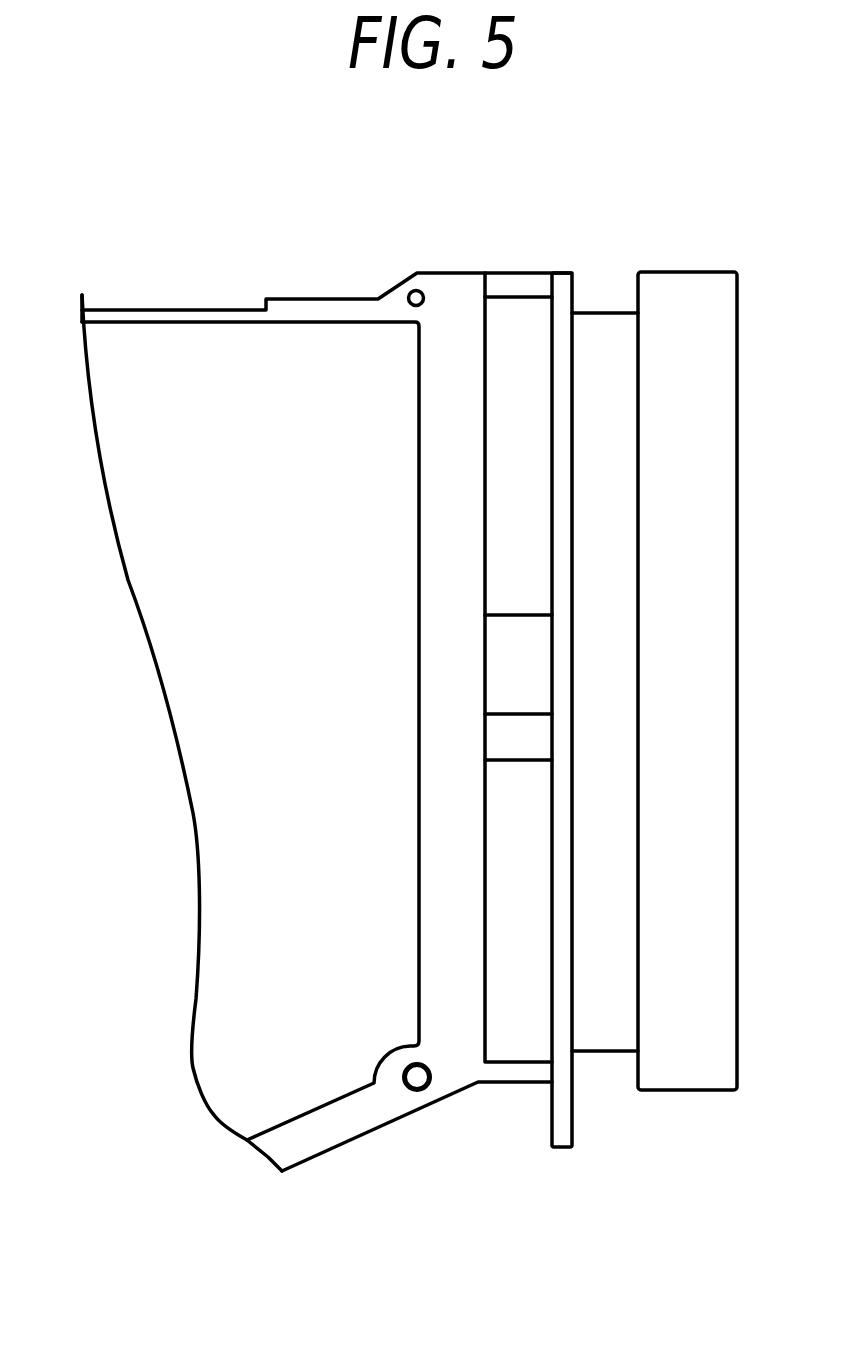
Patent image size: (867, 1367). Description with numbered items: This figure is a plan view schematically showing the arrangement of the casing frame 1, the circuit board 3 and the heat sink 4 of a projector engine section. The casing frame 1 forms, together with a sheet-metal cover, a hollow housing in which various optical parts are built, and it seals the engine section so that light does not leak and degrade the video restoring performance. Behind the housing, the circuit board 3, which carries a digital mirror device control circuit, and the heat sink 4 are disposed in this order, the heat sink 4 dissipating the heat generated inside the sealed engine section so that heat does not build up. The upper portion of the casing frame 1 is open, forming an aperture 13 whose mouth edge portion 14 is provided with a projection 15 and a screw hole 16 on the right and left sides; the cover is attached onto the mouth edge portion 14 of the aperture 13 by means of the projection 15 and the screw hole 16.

The casing frame 1 is at (335, 1145).
The circuit board 3 is at (558, 1147).
The heat sink 4 is at (692, 1092).
The aperture 13 is at (226, 989).
The mouth edge portion 14 is at (443, 851).
The projection 15 is at (428, 296).
The screw hole 16 is at (425, 1089).